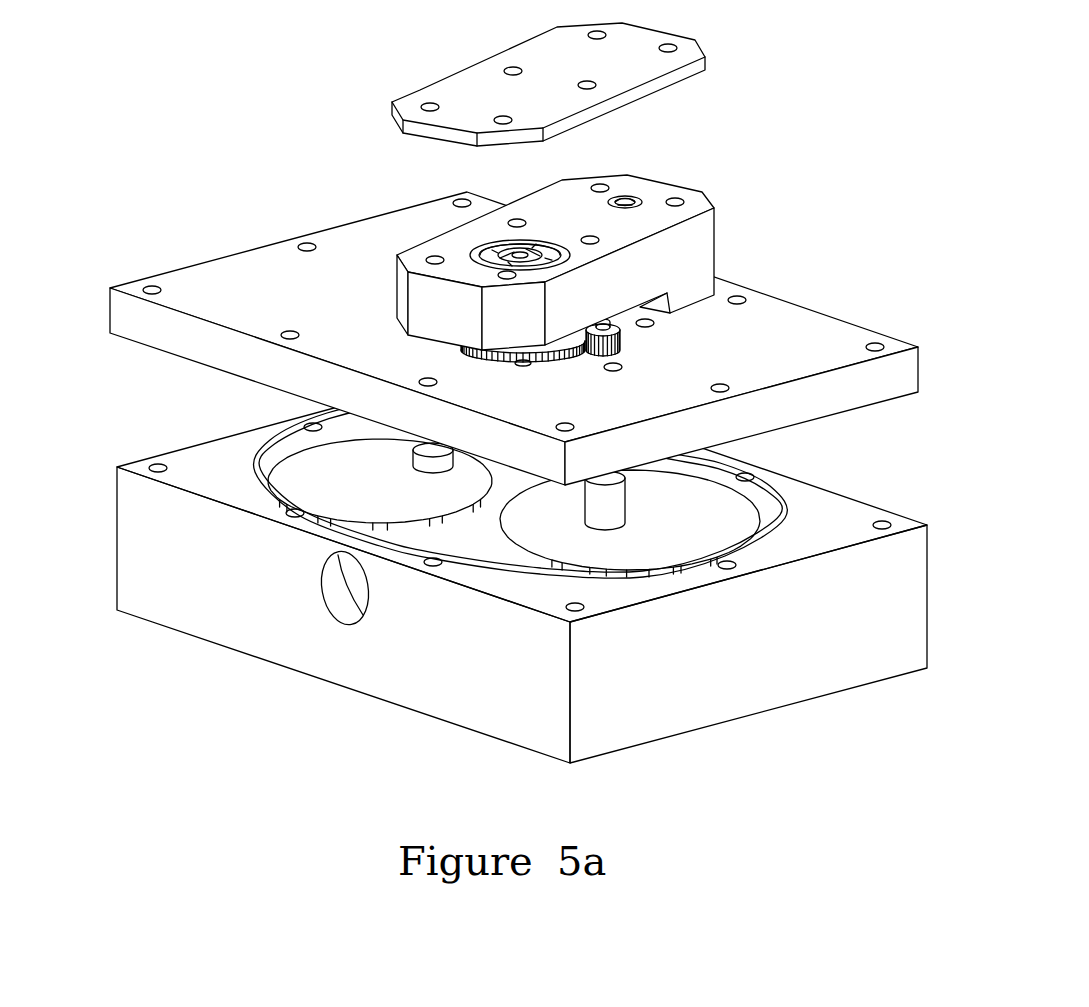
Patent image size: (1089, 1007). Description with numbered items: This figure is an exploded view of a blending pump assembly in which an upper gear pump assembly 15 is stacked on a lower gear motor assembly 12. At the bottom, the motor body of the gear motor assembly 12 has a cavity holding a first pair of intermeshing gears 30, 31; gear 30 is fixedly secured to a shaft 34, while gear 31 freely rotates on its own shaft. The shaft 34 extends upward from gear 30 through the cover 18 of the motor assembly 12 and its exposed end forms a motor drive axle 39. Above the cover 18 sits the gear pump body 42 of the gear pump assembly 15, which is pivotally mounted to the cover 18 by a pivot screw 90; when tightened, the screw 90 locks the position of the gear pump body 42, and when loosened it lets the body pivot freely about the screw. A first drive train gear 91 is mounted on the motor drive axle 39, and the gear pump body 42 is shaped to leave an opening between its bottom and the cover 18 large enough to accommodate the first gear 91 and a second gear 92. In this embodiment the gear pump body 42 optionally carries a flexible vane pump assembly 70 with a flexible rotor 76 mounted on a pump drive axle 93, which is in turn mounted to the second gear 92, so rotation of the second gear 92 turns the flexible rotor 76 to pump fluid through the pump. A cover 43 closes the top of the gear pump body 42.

The lower gear motor assembly 12 is at (576, 566).
The upper gear pump assembly 15 is at (365, 291).
The cover 18 is at (785, 322).
The gear 30 is at (644, 534).
The gear 31 is at (362, 482).
The shaft 34 is at (596, 505).
The motor drive axle 39 is at (615, 328).
The gear pump body 42 is at (591, 246).
The cover 43 is at (687, 46).
The flexible vane pump assembly 70 is at (562, 232).
The flexible rotor 76 is at (552, 268).
The pivot screw 90 is at (633, 193).
The first drive train gear 91 is at (597, 357).
The second gear 92 is at (487, 356).
The pump drive axle 93 is at (527, 248).